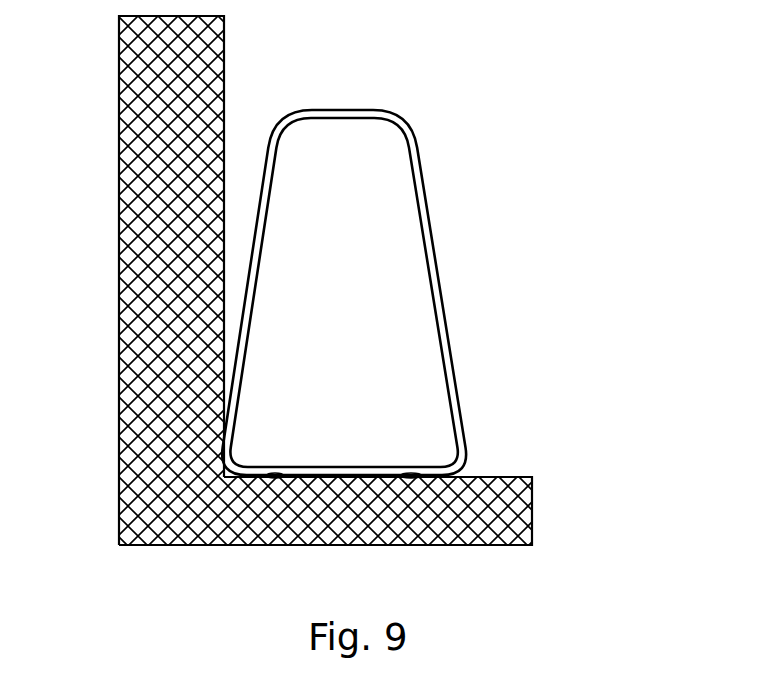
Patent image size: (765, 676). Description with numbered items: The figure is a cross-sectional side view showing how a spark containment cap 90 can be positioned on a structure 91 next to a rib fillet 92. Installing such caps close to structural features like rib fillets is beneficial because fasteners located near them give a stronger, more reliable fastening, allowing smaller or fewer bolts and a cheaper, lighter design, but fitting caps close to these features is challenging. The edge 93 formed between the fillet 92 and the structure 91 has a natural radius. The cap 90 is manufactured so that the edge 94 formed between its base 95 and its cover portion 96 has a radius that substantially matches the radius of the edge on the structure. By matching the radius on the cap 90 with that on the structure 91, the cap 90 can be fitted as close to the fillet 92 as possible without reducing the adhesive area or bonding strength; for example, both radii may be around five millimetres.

The spark containment cap 90 is at (388, 283).
The structure 91 is at (515, 513).
The rib fillet 92 is at (140, 230).
The edge 93 is at (238, 473).
The edge 94 is at (457, 443).
The base 95 is at (347, 473).
The cover portion 96 is at (450, 372).